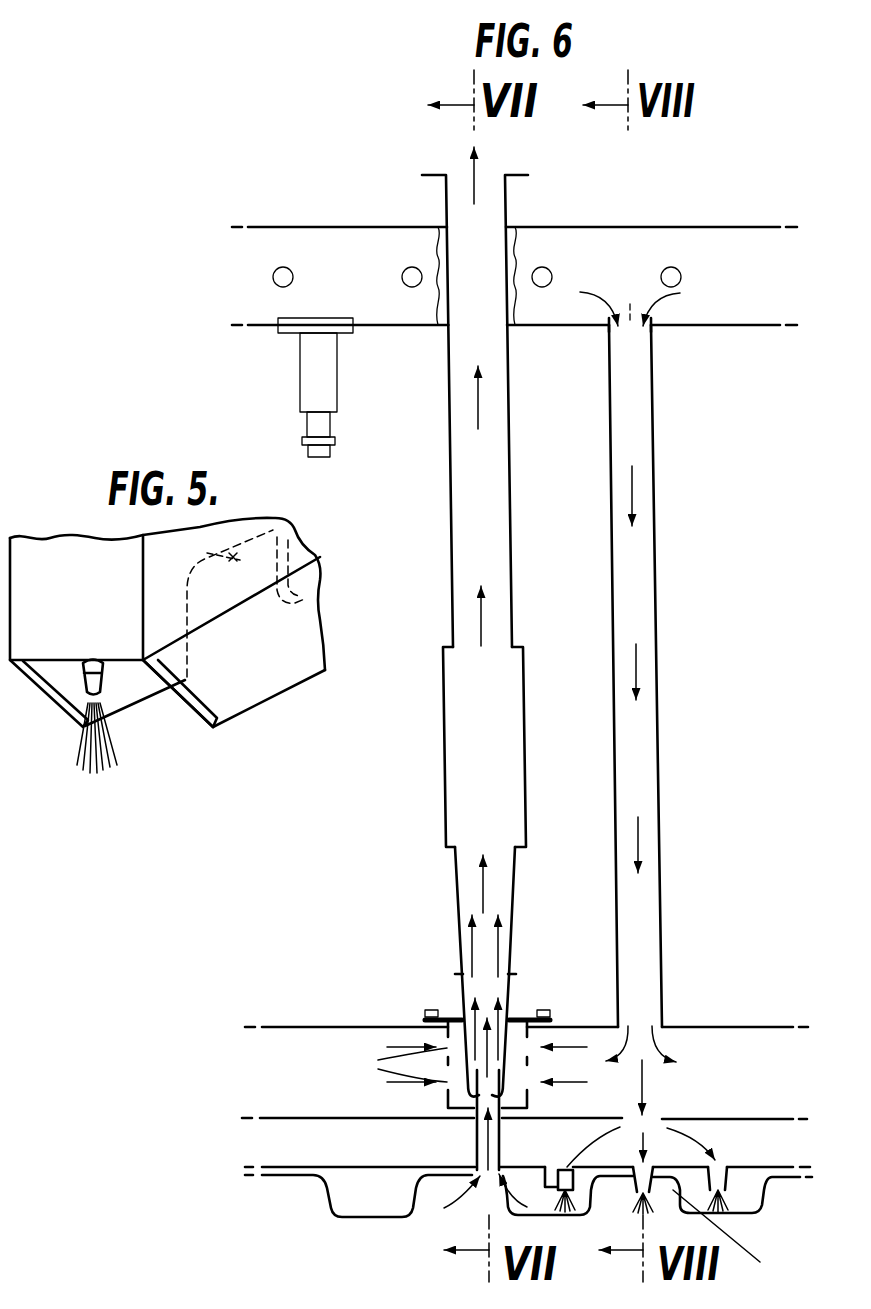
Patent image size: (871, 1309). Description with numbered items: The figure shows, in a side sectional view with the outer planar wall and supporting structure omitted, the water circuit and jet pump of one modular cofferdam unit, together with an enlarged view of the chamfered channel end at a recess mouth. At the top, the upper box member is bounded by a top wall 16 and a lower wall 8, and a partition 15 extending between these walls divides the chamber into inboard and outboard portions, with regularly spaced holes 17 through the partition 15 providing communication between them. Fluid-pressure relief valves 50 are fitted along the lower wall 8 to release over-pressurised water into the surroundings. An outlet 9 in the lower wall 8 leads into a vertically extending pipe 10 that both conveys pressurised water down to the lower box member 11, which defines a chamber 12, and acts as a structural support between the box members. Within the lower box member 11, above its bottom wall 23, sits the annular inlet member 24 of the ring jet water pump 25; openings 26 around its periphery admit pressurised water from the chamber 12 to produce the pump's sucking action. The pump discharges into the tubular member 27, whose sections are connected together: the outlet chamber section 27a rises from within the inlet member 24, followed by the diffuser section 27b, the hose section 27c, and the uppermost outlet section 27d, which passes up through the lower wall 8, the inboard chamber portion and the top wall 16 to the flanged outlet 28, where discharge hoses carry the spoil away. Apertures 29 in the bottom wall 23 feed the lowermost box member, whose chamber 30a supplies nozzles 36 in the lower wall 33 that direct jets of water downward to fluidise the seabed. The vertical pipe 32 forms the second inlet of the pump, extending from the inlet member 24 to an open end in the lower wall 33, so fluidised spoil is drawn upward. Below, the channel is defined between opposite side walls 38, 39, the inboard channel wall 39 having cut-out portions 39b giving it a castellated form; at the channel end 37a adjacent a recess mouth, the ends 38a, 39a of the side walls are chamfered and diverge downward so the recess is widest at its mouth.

In FIG. 6, the lower wall 8 is at (671, 333).
In FIG. 6, the outlet 9 is at (630, 304).
In FIG. 6, the pipe 10 is at (659, 676).
In FIG. 6, the lower box member 11 is at (678, 1027).
In FIG. 6, the chamber 12 is at (567, 1062).
In FIG. 6, the partition 15 is at (667, 200).
In FIG. 6, the top wall 16 is at (279, 225).
In FIG. 6, the hole 17 is at (683, 271).
In FIG. 6, the bottom wall 23 is at (733, 1119).
In FIG. 6, the annular inlet member 24 is at (448, 1035).
In FIG. 6, the ring jet water pump 25 is at (446, 988).
In FIG. 6, the opening 26 is at (461, 1067).
In FIG. 6, the tubular member 27 is at (482, 711).
In FIG. 6, the outlet chamber section 27a is at (508, 990).
In FIG. 6, the diffuser section 27b is at (516, 877).
In FIG. 6, the hose section 27c is at (520, 645).
In FIG. 6, the outlet section 27d is at (512, 436).
In FIG. 6, the flanged outlet 28 is at (445, 202).
In FIG. 6, the aperture 29 is at (652, 1120).
In FIG. 6, the chamber 30a is at (813, 1161).
In FIG. 6, the vertical pipe 32 is at (475, 1140).
In FIG. 6, the lower wall 33 is at (317, 1178).
In FIG. 6, the nozzle 36 is at (571, 1158).
In FIG. 5, the nozzle 36 is at (91, 662).
In FIG. 5, the channel end 37a is at (143, 708).
In FIG. 5, the side wall 38 is at (268, 682).
In FIG. 5, the side wall end 38a is at (202, 727).
In FIG. 6, the inboard channel wall 39 is at (752, 1210).
In FIG. 5, the inboard channel wall 39 is at (300, 610).
In FIG. 5, the side wall end 39a is at (85, 723).
In FIG. 6, the cut-out portion 39b is at (437, 1197).
In FIG. 5, the cut-out portion 39b is at (196, 555).
In FIG. 6, the fluid-pressure relief valve 50 is at (313, 363).